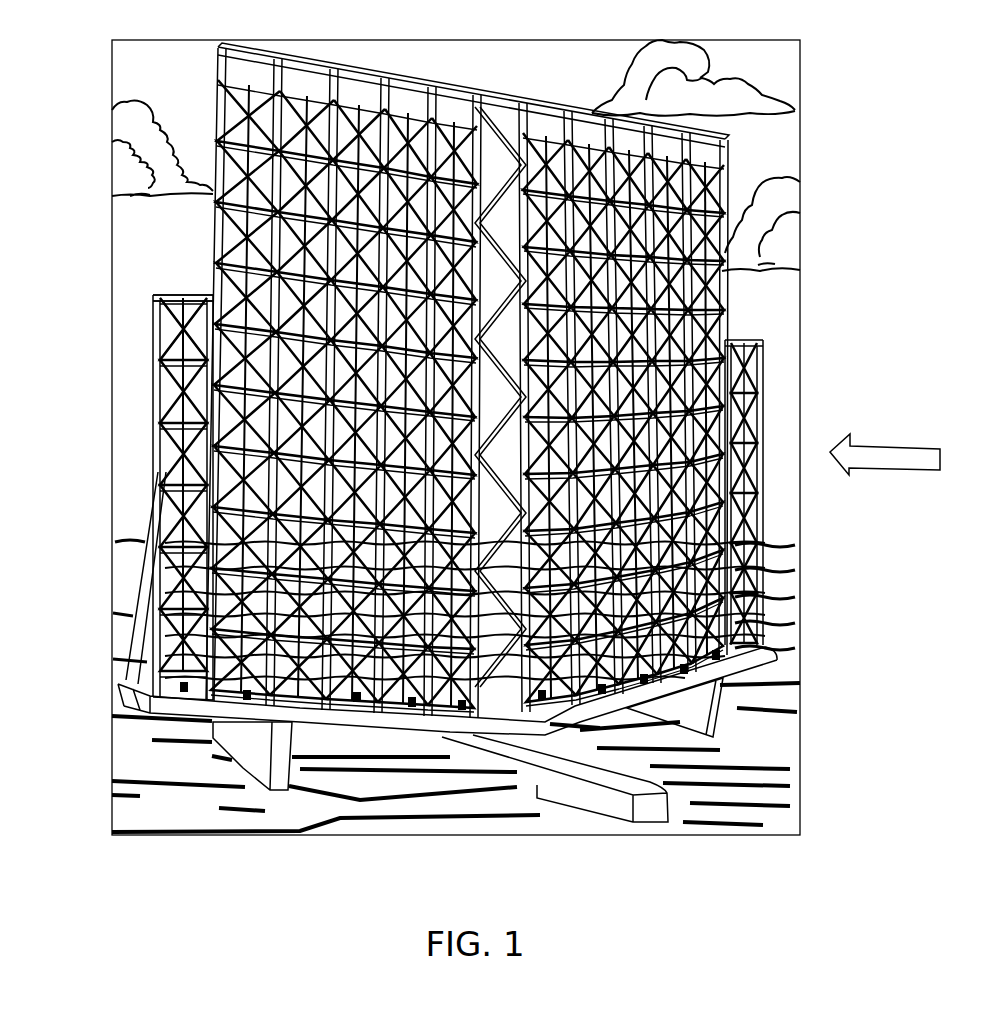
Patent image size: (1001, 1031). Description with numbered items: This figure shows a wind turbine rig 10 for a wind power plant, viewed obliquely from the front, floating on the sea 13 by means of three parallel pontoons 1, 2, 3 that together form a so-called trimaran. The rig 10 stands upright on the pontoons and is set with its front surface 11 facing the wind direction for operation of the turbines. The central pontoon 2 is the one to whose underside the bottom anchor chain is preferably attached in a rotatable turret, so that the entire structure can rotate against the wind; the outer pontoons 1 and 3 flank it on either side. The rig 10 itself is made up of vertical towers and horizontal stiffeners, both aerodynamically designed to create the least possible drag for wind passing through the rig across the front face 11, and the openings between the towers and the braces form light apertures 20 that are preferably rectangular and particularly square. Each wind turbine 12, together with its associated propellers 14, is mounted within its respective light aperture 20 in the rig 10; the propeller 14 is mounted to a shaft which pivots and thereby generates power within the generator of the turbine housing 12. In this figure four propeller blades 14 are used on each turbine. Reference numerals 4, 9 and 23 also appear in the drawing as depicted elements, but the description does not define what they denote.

The pontoon 1 is at (245, 772).
The central pontoon 2 is at (537, 798).
The pontoon 3 is at (760, 695).
The wave direction arrow 4 is at (889, 470).
The base beam 9 is at (118, 683).
The wind turbine rig 10 is at (525, 380).
The front surface 11 is at (712, 299).
The wind turbine 12 is at (180, 307).
The sea 13 is at (140, 795).
The propeller 14 is at (182, 343).
The light aperture 20 is at (188, 485).
The support strut 23 is at (150, 612).